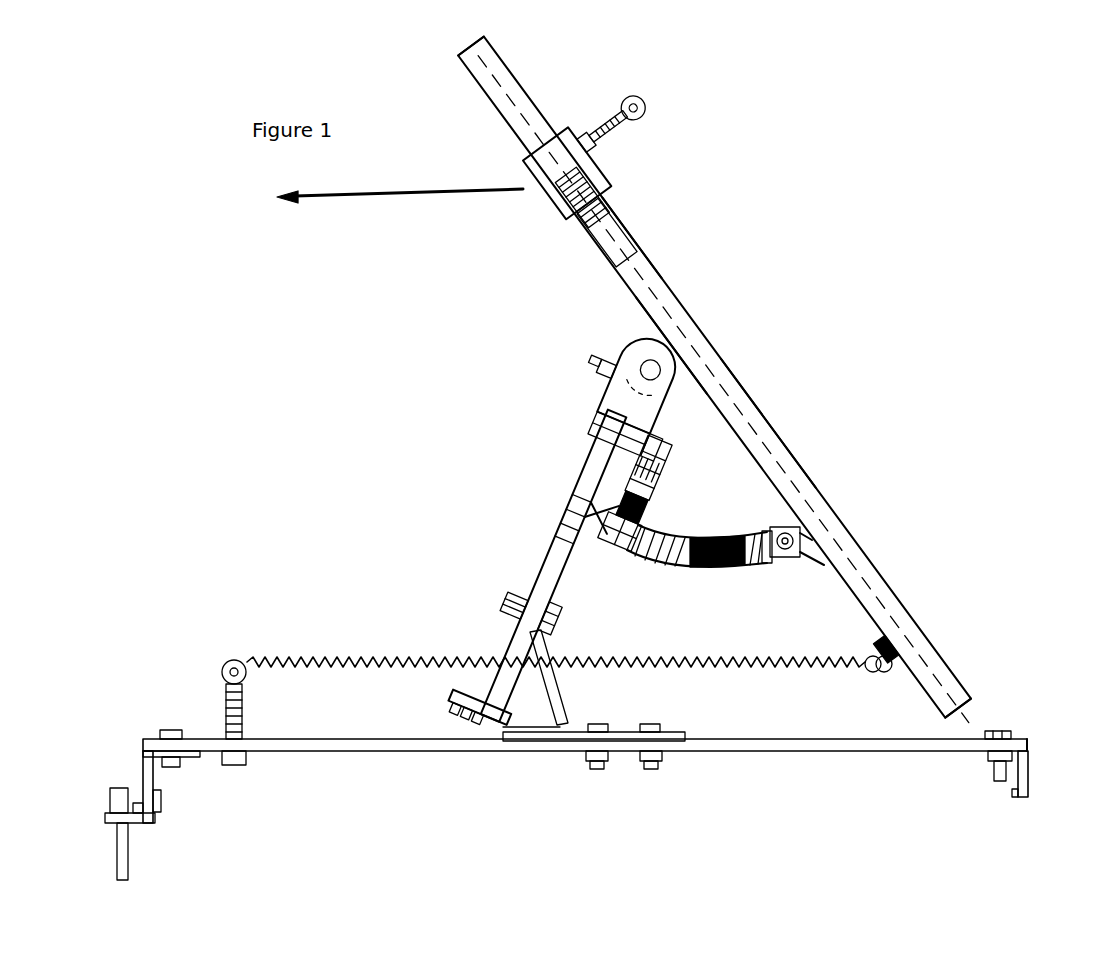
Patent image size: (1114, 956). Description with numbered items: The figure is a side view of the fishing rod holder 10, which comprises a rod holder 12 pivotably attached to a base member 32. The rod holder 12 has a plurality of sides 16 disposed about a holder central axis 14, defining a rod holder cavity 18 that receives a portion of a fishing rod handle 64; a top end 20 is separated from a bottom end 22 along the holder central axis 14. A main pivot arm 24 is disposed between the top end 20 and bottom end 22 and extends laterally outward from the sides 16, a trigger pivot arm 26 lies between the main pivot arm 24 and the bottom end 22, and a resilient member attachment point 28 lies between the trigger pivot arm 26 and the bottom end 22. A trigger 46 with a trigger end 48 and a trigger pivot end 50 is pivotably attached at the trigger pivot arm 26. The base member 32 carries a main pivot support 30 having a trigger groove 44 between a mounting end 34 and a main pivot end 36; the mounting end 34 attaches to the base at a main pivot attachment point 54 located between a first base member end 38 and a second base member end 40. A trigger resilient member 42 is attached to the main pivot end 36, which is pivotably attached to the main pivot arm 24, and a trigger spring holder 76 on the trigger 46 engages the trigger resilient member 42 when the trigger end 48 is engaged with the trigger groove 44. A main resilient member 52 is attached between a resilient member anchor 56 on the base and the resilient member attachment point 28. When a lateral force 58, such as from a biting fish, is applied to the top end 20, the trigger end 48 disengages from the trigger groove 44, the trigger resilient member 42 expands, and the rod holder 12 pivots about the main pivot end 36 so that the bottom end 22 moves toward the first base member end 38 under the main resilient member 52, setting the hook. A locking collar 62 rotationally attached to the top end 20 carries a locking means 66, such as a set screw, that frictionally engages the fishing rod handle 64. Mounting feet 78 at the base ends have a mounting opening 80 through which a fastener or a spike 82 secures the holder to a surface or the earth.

The fishing rod holder 10 is at (735, 252).
The rod holder 12 is at (727, 344).
The holder central axis 14 is at (518, 93).
The plurality of sides 16 is at (625, 298).
The rod holder cavity 18 is at (762, 405).
The top end 20 is at (578, 212).
The bottom end 22 is at (962, 709).
The main pivot arm 24 is at (660, 337).
The trigger pivot arm 26 is at (828, 566).
The resilient member attachment point 28 is at (897, 664).
The main pivot support 30 is at (549, 540).
The base member 32 is at (415, 753).
The mounting end 34 is at (480, 678).
The main pivot end 36 is at (602, 437).
The first base member end 38 is at (152, 738).
The second base member end 40 is at (1030, 745).
The trigger resilient member 42 is at (664, 471).
The trigger groove 44 is at (573, 503).
The trigger 46 is at (680, 565).
The trigger end 48 is at (587, 510).
The trigger pivot end 50 is at (771, 528).
The main resilient member 52 is at (362, 660).
The main pivot attachment point 54 is at (488, 738).
The resilient member anchor 56 is at (238, 659).
The lateral force 58 is at (452, 188).
The locking collar 62 is at (523, 150).
The fishing rod handle 64 is at (463, 53).
The locking means 66 is at (606, 142).
The trigger spring holder 76 is at (656, 500).
The mounting feet 78 is at (155, 789).
The mounting opening 80 is at (130, 824).
The spike 82 is at (108, 799).